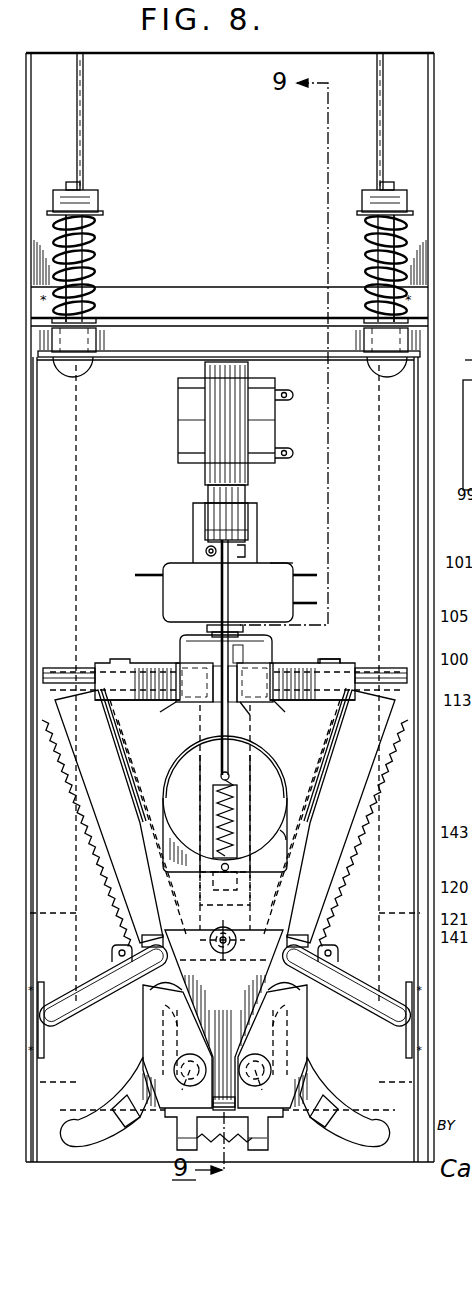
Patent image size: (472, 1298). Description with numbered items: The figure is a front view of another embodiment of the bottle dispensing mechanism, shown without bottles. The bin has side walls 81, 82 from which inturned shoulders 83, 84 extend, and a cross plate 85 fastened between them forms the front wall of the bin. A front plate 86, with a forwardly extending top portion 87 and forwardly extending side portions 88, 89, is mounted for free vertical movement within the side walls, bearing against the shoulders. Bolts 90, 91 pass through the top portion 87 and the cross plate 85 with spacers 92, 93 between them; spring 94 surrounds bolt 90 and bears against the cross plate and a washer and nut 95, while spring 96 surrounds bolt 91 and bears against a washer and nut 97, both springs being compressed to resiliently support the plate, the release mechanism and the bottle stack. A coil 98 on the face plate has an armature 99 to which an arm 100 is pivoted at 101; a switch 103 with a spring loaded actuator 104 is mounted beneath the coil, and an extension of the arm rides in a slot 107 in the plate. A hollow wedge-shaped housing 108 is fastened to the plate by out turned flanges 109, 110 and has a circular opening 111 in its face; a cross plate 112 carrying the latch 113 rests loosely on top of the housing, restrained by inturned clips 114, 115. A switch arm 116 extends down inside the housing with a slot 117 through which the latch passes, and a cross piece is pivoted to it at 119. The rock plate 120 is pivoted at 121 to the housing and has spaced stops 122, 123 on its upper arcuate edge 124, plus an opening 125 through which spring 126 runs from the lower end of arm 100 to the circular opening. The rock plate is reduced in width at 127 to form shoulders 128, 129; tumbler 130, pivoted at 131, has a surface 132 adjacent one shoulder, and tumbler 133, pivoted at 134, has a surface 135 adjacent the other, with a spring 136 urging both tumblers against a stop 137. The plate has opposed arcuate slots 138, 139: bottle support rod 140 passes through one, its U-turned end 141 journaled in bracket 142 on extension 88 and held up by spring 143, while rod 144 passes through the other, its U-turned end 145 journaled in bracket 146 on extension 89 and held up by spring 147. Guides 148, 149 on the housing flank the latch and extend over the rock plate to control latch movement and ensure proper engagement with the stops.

The side wall 81 is at (32, 73).
The side wall 82 is at (436, 62).
The inturned shoulder 83 is at (78, 97).
The inturned shoulder 84 is at (392, 95).
The cross plate 85 is at (186, 287).
The front plate 86 is at (225, 413).
The top portion 87 is at (157, 359).
The side portion 88 is at (38, 487).
The side portion 89 is at (416, 509).
The bolt 90 is at (72, 244).
The bolt 91 is at (380, 248).
The spacer 92 is at (97, 343).
The spacer 93 is at (364, 343).
The spring 94 is at (70, 268).
The washer and nut 95 is at (100, 210).
The spring 96 is at (370, 297).
The washer and nut 97 is at (372, 205).
The coil 98 is at (266, 425).
The armature 99 is at (213, 513).
The arm 100 is at (229, 588).
The pivot 101 is at (207, 552).
The switch 103 is at (296, 557).
The spring loaded actuator 104 is at (236, 658).
The slot 107 is at (195, 540).
The wedge-shaped housing 108 is at (312, 692).
The out turned flange 109 is at (121, 817).
The out turned flange 110 is at (329, 817).
The circular opening 111 is at (282, 792).
The cross plate 112 is at (372, 668).
The latch 113 is at (214, 682).
The inturned clip 114 is at (117, 662).
The inturned clip 115 is at (338, 653).
The switch arm 116 is at (232, 778).
The slot 117 is at (266, 749).
The pivot 119 is at (245, 935).
The rock plate 120 is at (193, 817).
The pivot 121 is at (225, 973).
The stop 122 is at (137, 702).
The stop 123 is at (276, 690).
The upper arcuate edge 124 is at (300, 703).
The opening 125 is at (284, 836).
The spring 126 is at (220, 818).
The reduced width portion 127 is at (224, 1020).
The shoulder 128 is at (175, 990).
The shoulder 129 is at (302, 997).
The tumbler 130 is at (182, 1037).
The pivot 131 is at (185, 1138).
The surface 132 is at (178, 1012).
The tumbler 133 is at (282, 1050).
The pivot 134 is at (262, 1069).
The surface 135 is at (292, 1012).
The spring 136 is at (240, 1140).
The stop 137 is at (232, 1108).
The arcuate slot 138 is at (85, 1114).
The arcuate slot 139 is at (358, 1114).
The bottle support rod 140 is at (112, 952).
The U-turned end 141 is at (104, 985).
The bracket 142 is at (40, 995).
The spring 143 is at (92, 868).
The bottle support rod 144 is at (358, 955).
The U-turned end 145 is at (347, 985).
The bracket 146 is at (408, 1050).
The spring 147 is at (356, 870).
The guide 148 is at (195, 703).
The guide 149 is at (245, 703).